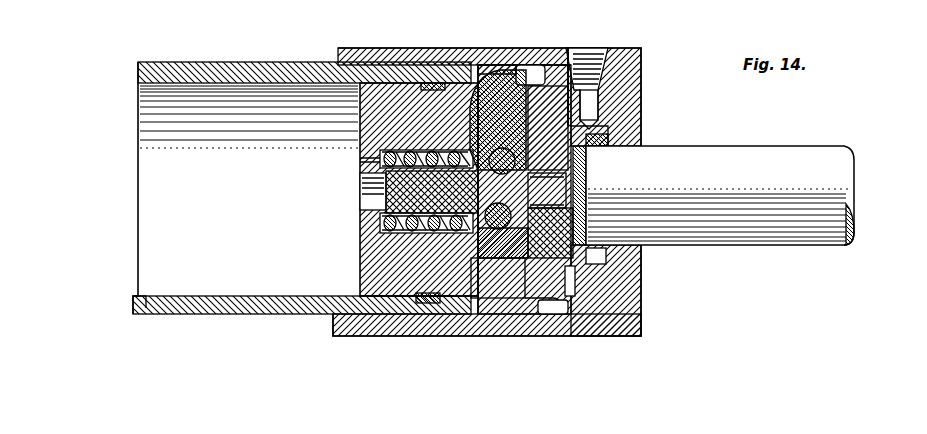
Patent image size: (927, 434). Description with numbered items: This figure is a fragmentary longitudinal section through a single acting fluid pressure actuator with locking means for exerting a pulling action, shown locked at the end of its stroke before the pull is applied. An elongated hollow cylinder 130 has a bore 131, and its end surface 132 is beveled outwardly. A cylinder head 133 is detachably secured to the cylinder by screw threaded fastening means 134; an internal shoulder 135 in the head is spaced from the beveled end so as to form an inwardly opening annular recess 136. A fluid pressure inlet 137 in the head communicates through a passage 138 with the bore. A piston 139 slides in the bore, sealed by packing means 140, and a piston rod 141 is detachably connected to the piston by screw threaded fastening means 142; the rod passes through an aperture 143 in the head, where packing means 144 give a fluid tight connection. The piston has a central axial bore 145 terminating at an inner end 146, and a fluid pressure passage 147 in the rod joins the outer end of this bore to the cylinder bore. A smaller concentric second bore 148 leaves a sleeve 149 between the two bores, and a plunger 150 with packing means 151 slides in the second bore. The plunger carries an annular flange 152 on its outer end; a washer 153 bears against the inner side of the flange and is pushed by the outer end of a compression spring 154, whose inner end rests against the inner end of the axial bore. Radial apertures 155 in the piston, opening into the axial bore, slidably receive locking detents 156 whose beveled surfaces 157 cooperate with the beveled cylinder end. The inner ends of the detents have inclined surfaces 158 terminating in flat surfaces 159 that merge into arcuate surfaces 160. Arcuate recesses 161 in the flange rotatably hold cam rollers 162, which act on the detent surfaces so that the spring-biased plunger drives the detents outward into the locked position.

The hollow cylinder 130 is at (277, 44).
The bore 131 is at (130, 288).
The end surface 132 is at (462, 305).
The cylinder head 133 is at (616, 336).
The screw threaded fastening means 134 is at (366, 308).
The internal shoulder 135 is at (548, 308).
The annular recess 136 is at (510, 310).
The fluid pressure inlet 137 is at (586, 42).
The passage 138 is at (592, 95).
The piston 139 is at (341, 269).
The packing means 140 is at (420, 296).
The piston rod 141 is at (800, 240).
The screw threaded fastening means 142 is at (572, 260).
The aperture 143 is at (630, 134).
The packing means 144 is at (612, 122).
The central axial bore 145 is at (442, 144).
The inner end 146 is at (360, 152).
The fluid pressure passage 147 is at (580, 168).
The second bore 148 is at (352, 192).
The sleeve 149 is at (382, 224).
The plunger 150 is at (438, 224).
The packing means 151 is at (406, 224).
The annular flange 152 is at (550, 233).
The washer 153 is at (478, 226).
The compression spring 154 is at (402, 142).
The radial apertures 155 is at (547, 183).
The locking detents 156 is at (508, 72).
The beveled surfaces 157 is at (486, 72).
The inclined surfaces 158 is at (482, 140).
The flat surfaces 159 is at (498, 120).
The arcuate surfaces 160 is at (548, 128).
The arcuate recesses 161 is at (478, 180).
The cam rollers 162 is at (502, 206).